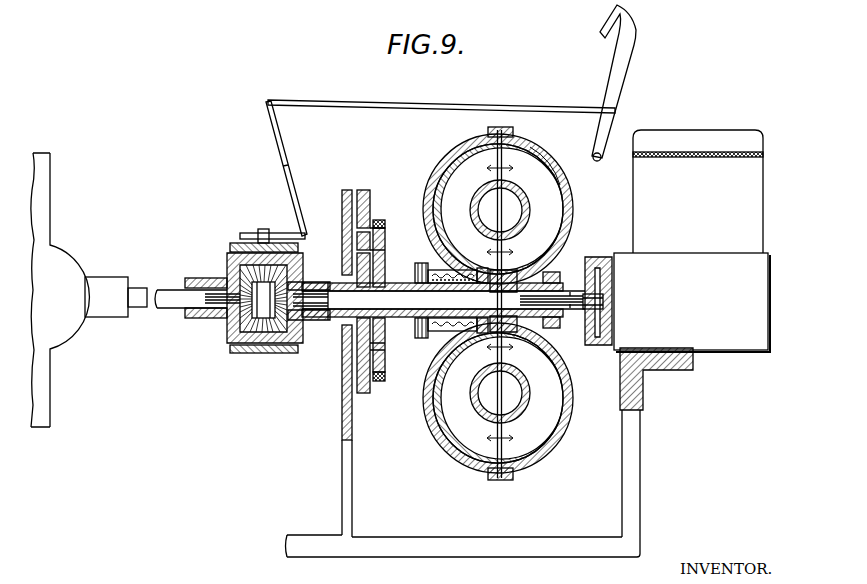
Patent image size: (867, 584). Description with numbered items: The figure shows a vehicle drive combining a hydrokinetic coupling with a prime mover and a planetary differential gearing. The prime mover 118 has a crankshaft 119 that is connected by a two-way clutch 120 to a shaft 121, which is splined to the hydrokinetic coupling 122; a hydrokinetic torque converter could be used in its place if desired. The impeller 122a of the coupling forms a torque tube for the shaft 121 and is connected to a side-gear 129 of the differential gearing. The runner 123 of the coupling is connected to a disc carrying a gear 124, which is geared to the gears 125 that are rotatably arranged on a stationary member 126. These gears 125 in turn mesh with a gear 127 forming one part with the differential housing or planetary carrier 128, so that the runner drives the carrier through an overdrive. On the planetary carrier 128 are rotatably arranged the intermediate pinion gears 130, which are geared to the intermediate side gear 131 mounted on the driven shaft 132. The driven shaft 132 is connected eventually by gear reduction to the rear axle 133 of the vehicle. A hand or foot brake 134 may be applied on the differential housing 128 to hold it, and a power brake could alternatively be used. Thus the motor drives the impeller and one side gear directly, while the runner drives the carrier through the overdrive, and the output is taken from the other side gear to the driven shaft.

The prime mover 118 is at (740, 138).
The crankshaft 119 is at (610, 298).
The two-way clutch 120 is at (591, 257).
The shaft 121 is at (328, 297).
The hydrokinetic coupling 122 is at (570, 197).
The impeller 122a is at (530, 170).
The runner 123 is at (446, 183).
The gear 124 is at (386, 258).
The gears 125 is at (380, 224).
The stationary member 126 is at (343, 214).
The gear 127 is at (380, 347).
The differential housing or planetary carrier 128 is at (302, 343).
The side-gear 129 is at (288, 324).
The intermediate pinion gears 130 is at (248, 353).
The intermediate side gear 131 is at (230, 322).
The driven shaft 132 is at (172, 296).
The rear axle 133 is at (86, 282).
The hand or foot brake 134 is at (618, 82).